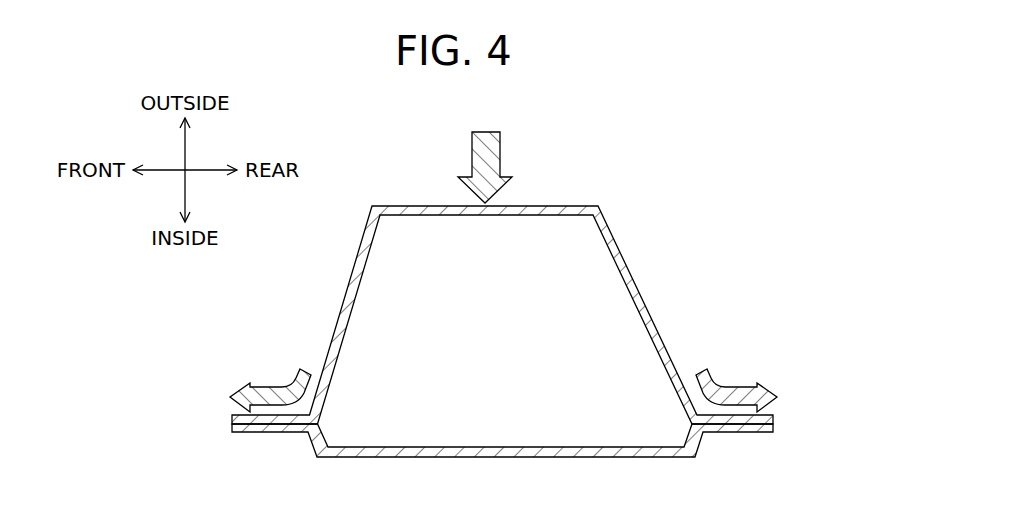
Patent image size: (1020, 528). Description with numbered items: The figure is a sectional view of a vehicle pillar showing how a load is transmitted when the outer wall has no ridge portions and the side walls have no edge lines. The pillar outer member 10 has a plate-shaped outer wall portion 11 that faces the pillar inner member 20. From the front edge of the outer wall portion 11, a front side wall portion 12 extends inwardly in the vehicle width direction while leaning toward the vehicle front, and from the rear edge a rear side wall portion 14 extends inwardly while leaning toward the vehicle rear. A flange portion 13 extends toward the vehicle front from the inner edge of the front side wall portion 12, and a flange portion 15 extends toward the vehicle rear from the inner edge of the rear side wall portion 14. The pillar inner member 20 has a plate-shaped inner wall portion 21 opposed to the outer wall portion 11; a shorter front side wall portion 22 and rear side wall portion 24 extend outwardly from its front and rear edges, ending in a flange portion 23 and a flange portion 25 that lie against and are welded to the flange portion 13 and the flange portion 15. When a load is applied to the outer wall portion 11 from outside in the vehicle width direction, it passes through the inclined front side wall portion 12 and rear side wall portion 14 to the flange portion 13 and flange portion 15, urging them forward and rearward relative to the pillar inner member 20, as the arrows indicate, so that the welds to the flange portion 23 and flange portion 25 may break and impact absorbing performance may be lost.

The pillar outer member 10 is at (632, 209).
The outer wall portion 11 is at (491, 216).
The front side wall portion 12 is at (347, 317).
The flange portion 13 is at (231, 417).
The rear side wall portion 14 is at (632, 297).
The flange portion 15 is at (776, 412).
The pillar inner member 20 is at (626, 461).
The inner wall portion 21 is at (500, 458).
The front side wall portion 22 is at (310, 446).
The flange portion 23 is at (250, 433).
The rear side wall portion 24 is at (698, 446).
The flange portion 25 is at (748, 433).